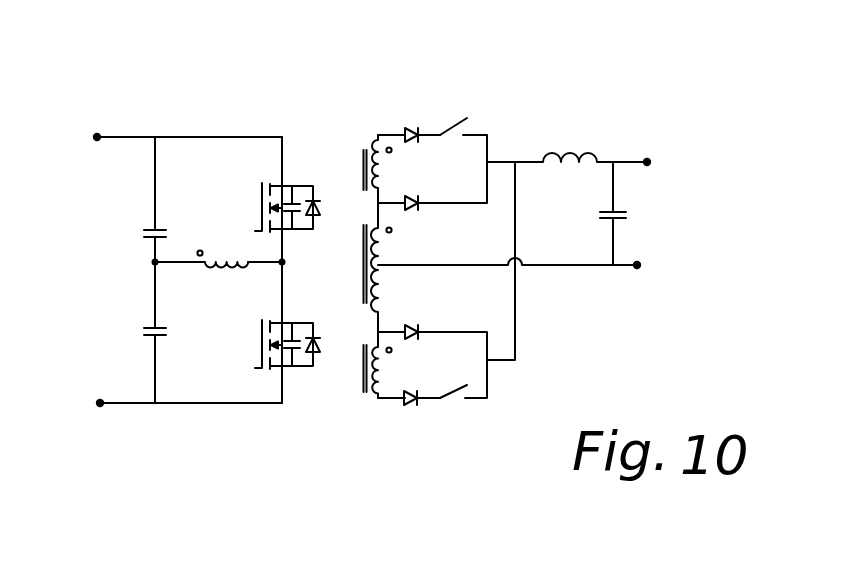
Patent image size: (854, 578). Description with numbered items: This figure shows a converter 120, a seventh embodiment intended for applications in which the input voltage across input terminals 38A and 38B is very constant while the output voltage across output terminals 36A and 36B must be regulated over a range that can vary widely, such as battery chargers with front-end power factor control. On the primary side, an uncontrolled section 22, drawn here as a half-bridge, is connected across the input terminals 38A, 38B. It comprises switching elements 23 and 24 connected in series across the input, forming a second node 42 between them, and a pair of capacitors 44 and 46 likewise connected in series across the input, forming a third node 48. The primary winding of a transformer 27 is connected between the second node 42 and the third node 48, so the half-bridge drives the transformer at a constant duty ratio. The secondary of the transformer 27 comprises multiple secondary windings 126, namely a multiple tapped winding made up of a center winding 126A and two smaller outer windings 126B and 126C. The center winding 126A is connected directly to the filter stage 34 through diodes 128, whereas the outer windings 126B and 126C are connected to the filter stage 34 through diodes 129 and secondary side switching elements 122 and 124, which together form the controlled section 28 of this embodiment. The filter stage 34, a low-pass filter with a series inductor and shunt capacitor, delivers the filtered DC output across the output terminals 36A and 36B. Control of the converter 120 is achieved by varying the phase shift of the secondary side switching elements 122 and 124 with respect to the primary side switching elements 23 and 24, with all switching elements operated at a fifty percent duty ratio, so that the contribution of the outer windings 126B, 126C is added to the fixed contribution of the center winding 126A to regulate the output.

The converter 120 is at (215, 54).
The uncontrolled section 22 is at (283, 127).
The switching element 23 is at (280, 166).
The switching element 24 is at (281, 305).
The transformer 27 is at (178, 266).
The controlled section 28 is at (580, 47).
The filtering circuit 34 is at (600, 128).
The output terminal 36A is at (647, 162).
The output terminal 36B is at (637, 265).
The input terminal 38A is at (97, 135).
The input terminal 38B is at (100, 405).
The second node 42 is at (282, 257).
The capacitor 44 is at (153, 200).
The capacitor 46 is at (157, 312).
The third node 48 is at (155, 262).
The secondary side switching element 122 is at (460, 121).
The secondary side switching element 124 is at (462, 385).
The secondary windings 126 is at (338, 89).
The center winding 126A is at (384, 252).
The secondary winding 126B is at (385, 171).
The secondary winding 126C is at (380, 372).
The diode 128 is at (410, 200).
The diode 129 is at (406, 129).